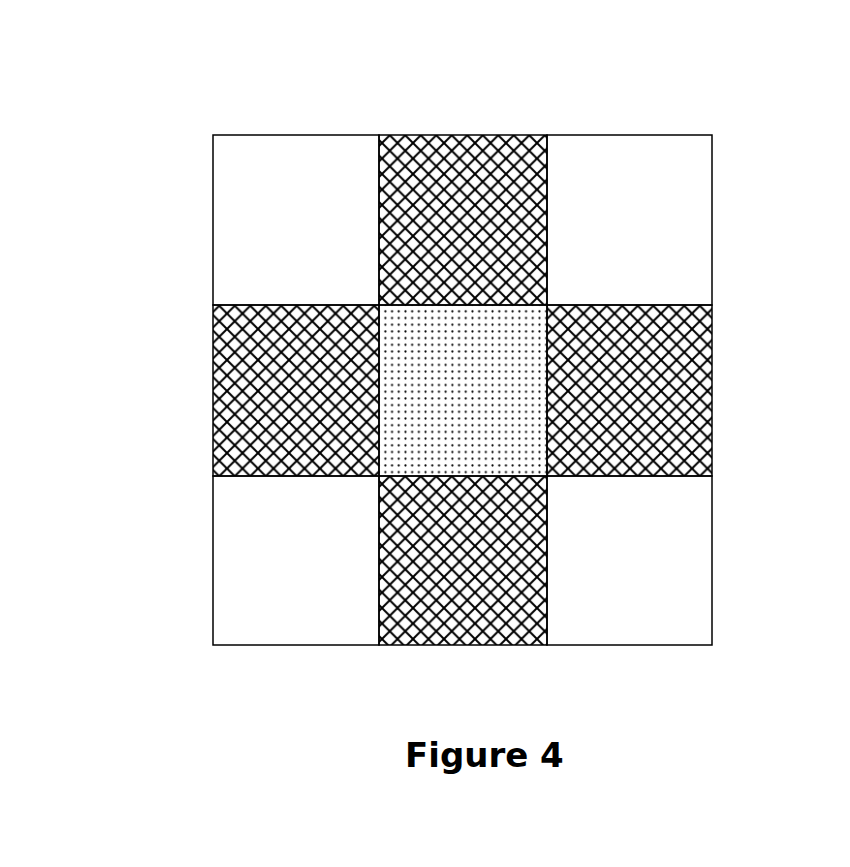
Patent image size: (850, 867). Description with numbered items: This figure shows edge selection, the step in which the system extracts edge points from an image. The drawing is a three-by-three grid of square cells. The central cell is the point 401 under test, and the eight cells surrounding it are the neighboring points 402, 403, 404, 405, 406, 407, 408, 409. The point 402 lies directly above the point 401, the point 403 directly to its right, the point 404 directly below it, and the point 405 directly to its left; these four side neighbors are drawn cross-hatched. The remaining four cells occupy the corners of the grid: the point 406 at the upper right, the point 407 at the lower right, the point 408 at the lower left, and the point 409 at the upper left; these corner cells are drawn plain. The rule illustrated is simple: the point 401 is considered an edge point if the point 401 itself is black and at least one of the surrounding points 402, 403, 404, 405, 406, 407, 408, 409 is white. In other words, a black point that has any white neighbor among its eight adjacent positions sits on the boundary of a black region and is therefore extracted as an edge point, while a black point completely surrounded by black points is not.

The point 401 is at (463, 393).
The point 402 is at (468, 135).
The point 403 is at (712, 388).
The point 404 is at (400, 645).
The point 405 is at (213, 390).
The point 406 is at (633, 135).
The point 407 is at (712, 645).
The point 408 is at (213, 645).
The point 409 is at (302, 135).